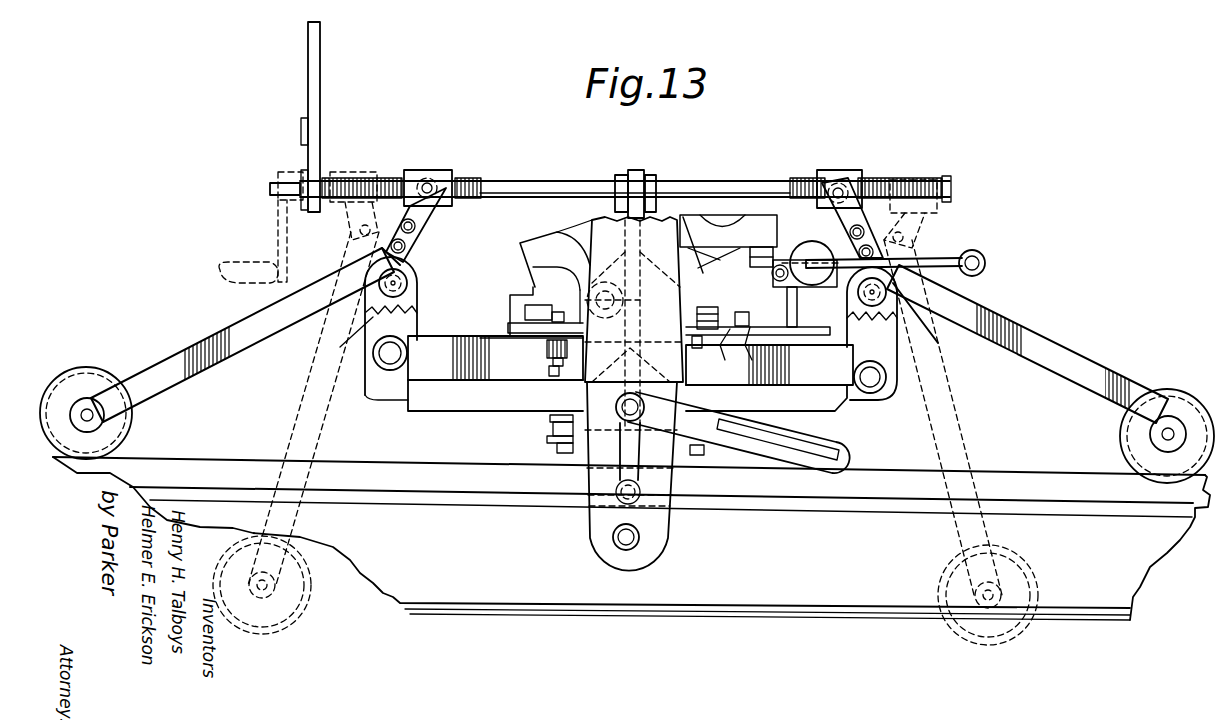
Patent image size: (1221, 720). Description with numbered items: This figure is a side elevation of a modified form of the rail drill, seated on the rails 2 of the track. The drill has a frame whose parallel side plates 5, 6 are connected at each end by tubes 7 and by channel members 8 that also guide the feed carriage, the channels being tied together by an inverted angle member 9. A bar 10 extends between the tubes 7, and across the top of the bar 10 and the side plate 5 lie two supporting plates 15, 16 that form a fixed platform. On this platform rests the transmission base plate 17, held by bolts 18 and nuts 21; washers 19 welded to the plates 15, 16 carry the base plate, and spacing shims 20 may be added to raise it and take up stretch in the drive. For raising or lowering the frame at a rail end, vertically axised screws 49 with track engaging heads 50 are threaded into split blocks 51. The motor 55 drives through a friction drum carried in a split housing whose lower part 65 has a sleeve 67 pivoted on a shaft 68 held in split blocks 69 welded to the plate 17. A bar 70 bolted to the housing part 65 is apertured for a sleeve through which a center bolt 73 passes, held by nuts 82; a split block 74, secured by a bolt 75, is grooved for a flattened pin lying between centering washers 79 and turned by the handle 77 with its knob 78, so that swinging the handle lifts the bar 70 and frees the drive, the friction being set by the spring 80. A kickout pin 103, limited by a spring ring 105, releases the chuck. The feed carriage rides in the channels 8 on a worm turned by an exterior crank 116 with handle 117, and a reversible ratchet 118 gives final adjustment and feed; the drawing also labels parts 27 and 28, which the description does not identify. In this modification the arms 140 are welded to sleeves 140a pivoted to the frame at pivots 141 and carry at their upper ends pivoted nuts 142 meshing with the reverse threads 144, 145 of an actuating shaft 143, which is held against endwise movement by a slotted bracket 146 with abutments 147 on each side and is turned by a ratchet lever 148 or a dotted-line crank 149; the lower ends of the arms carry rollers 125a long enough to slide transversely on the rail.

The rails 2 is at (985, 480).
The side plate 5 is at (450, 345).
The side plate 6 is at (340, 347).
The tubes 7 is at (372, 392).
The channel members 8 is at (688, 368).
The inverted angle member 9 is at (642, 348).
The bar 10 is at (437, 415).
The supporting bar or plate 15 is at (531, 349).
The supporting bar or plate 16 is at (752, 388).
The transmission base plate 17 is at (508, 325).
The bolts 18 is at (560, 312).
The washers 19 is at (735, 344).
The spacing shims or washers 20 is at (548, 342).
The nuts 21 is at (550, 368).
The nut 27 is at (557, 450).
The hanger plate 28 is at (655, 535).
The vertically axised screws 49 is at (553, 430).
The track engaging heads 50 is at (547, 440).
The blocks 51 is at (550, 419).
The motor 55 is at (528, 245).
The lower housing part 65 is at (700, 262).
The sleeve 67 is at (623, 298).
The shaft 68 is at (614, 305).
The split blocks 69 is at (533, 280).
The bar 70 is at (745, 268).
The bolt 73 is at (798, 312).
The split block 74 is at (810, 285).
The bolt 75 is at (775, 287).
The handle 77 is at (930, 259).
The terminal knob or ball 78 is at (987, 263).
The centering washers 79 is at (790, 280).
The spring 80 is at (780, 230).
The nuts 82 is at (760, 340).
The kickout pin 103 is at (615, 538).
The exterior spring ring 105 is at (618, 545).
The exterior crank 116 is at (622, 455).
The handle 117 is at (622, 497).
The ratchet 118 is at (845, 452).
The rollers 125a is at (97, 380).
The arms 140 is at (205, 345).
The sleeves 140a is at (400, 302).
The pivot 141 is at (410, 278).
The pivoted nuts 142 is at (360, 175).
The actuating shaft 143 is at (555, 180).
The reverse thread 144 is at (468, 180).
The reverse thread 145 is at (800, 180).
The slotted bracket 146 is at (638, 170).
The abutments 147 is at (620, 175).
The ratchet lever 148 is at (320, 48).
The crank 149 is at (243, 262).